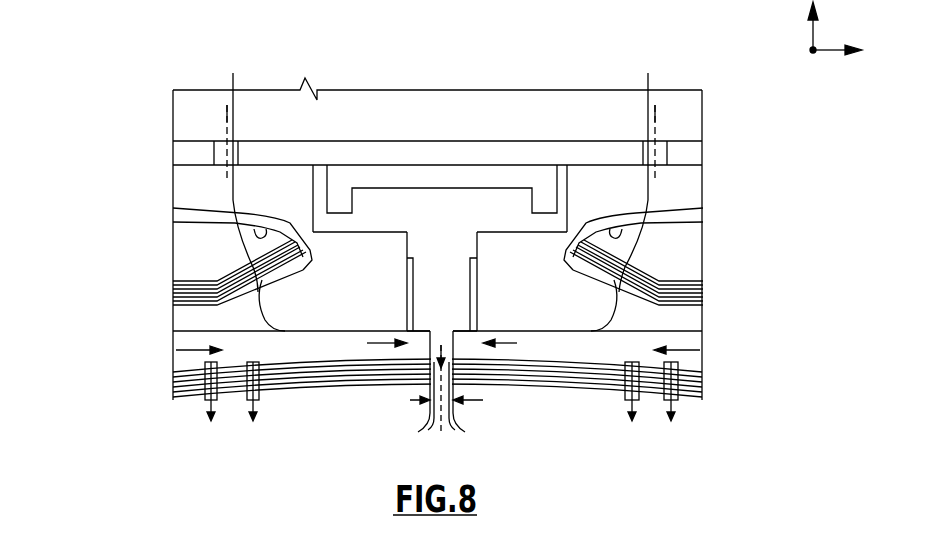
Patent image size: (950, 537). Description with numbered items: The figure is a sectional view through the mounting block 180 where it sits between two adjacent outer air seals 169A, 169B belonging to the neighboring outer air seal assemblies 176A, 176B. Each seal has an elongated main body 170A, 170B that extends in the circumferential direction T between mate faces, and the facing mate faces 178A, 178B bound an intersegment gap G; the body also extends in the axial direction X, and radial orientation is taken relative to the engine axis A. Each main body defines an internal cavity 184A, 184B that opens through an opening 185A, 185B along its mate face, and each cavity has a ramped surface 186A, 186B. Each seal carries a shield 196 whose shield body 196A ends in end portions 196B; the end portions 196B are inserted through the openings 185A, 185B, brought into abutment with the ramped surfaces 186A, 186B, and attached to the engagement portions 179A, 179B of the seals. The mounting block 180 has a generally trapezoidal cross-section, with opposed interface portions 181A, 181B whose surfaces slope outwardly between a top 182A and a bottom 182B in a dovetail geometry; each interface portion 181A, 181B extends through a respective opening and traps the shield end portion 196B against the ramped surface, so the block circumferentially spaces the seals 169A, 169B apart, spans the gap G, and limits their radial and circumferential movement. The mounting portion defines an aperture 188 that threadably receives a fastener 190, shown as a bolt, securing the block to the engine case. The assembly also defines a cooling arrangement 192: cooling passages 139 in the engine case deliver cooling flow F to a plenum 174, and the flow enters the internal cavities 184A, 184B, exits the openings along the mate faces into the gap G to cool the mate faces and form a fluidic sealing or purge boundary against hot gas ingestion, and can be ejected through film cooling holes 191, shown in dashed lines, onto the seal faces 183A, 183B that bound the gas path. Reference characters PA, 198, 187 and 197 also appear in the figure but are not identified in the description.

The cooling arrangement 192 is at (146, 62).
The outer air seal assembly 176A is at (138, 167).
The outer air seal assembly 176B is at (742, 167).
The plenum 174 is at (222, 189).
The cooling passage 139 is at (214, 148).
The passage axis PA is at (227, 116).
The ramped surface 186A is at (233, 78).
The ramped surface 186B is at (648, 78).
The curved guide 198 is at (267, 233).
The fastener 190 is at (470, 183).
The mounting block 180 is at (489, 218).
The top of mounting portion 182A is at (383, 232).
The bottom of mounting portion 182B is at (343, 333).
The corner 187 is at (306, 233).
The engagement portion 179A is at (275, 235).
The engagement portion 179B is at (601, 235).
The aperture 188 is at (407, 240).
The shield 196 is at (177, 205).
The shield body 196A is at (283, 272).
The end portion of shield 196B is at (594, 275).
The chamber 197 is at (222, 260).
The outer air seal 169A is at (178, 269).
The outer air seal 169B is at (700, 276).
The main body 170A is at (178, 306).
The main body 170B is at (703, 248).
The interface portion 181A is at (257, 303).
The interface portion 181B is at (620, 305).
The opening 185A is at (285, 352).
The opening 185B is at (592, 350).
The internal cavity 184A is at (284, 398).
The internal cavity 184B is at (704, 373).
The seal face 183A is at (247, 352).
The seal face 183B is at (589, 389).
The mate face 178A is at (430, 413).
The mate face 178B is at (453, 413).
The engine axis A is at (445, 432).
The intersegment gap G is at (410, 400).
The film cooling hole 191 is at (247, 352).
The cooling flow F is at (182, 350).
The circumferential direction T is at (845, 53).
The axial direction X is at (813, 55).